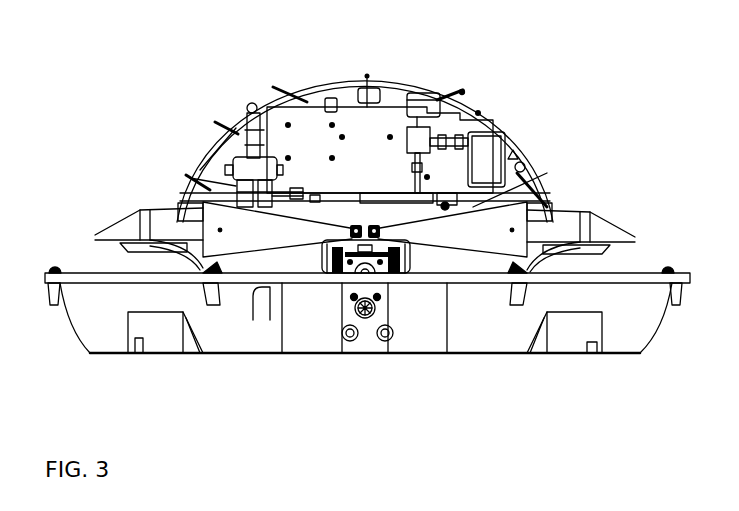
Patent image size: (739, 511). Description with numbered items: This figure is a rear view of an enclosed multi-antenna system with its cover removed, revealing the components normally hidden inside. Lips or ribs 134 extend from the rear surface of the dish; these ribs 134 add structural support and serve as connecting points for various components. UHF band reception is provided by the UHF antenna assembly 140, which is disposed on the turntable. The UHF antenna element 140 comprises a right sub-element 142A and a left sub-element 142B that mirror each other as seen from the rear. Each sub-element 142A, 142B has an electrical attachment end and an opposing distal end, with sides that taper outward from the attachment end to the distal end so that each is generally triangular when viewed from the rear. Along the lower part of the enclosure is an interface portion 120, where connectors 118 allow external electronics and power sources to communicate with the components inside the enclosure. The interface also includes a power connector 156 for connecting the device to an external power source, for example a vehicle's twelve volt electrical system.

The ribs 134 is at (297, 92).
The UHF antenna assembly 140 is at (197, 170).
The right sub-element 142A is at (483, 248).
The left sub-element 142B is at (232, 212).
The power connector 156 is at (347, 295).
The connectors 118 is at (374, 342).
The interface portion 120 is at (383, 297).